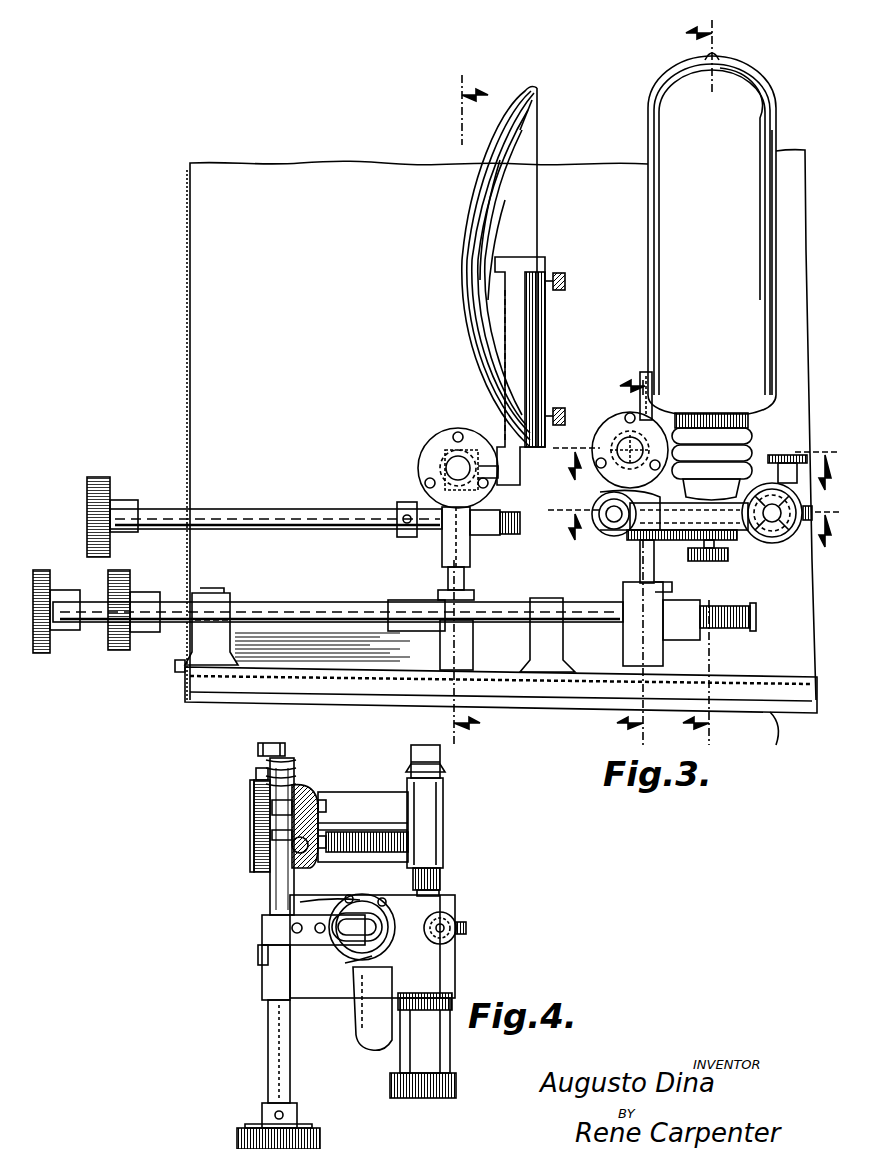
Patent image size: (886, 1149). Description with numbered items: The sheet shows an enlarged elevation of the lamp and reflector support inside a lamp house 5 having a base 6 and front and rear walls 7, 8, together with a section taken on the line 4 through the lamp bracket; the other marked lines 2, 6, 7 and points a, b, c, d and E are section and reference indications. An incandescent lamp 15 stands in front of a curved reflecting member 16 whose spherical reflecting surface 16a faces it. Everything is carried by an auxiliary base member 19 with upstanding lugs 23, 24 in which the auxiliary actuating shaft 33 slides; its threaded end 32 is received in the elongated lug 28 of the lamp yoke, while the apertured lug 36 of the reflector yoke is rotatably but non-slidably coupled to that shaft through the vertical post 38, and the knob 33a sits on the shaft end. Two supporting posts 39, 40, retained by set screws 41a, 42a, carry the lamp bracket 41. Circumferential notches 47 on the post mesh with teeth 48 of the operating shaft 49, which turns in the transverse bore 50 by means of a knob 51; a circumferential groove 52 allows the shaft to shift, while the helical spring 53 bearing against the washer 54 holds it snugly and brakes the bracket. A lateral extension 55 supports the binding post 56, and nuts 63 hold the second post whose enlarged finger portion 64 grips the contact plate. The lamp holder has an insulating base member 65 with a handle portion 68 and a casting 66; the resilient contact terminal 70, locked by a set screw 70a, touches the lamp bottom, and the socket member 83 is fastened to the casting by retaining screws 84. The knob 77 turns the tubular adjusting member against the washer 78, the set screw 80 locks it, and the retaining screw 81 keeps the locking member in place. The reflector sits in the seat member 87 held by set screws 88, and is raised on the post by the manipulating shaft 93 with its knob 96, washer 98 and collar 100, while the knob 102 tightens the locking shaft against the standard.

In FIG. 3, the section line 2 is at (694, 518).
In FIG. 3, the section line 4— 4 is at (696, 459).
In FIG. 3, the lamp house 5 is at (203, 343).
In FIG. 3, the base 6 is at (735, 389).
In FIG. 3, the front wall 7 is at (622, 562).
In FIG. 3, the rear wall 8 is at (190, 272).
In FIG. 3, the lamp 15 is at (770, 102).
In FIG. 3, the reflecting member 16 is at (462, 242).
In FIG. 3, the spherical reflecting surface 16a is at (530, 130).
In FIG. 3, the auxiliary base member 19 is at (500, 670).
In FIG. 3, the upstanding lug 23 is at (226, 600).
In FIG. 3, the upstanding lug 24 is at (560, 600).
In FIG. 3, the elongated lug 28 is at (680, 642).
In FIG. 3, the threaded end 32 is at (732, 632).
In FIG. 3, the auxiliary actuating shaft 33 is at (293, 603).
In FIG. 3, the knob 33a is at (42, 653).
In FIG. 3, the apertured lug 36 is at (400, 600).
In FIG. 3, the vertical post 38 is at (464, 583).
In FIG. 3, the supporting post 39 is at (640, 567).
In FIG. 4, the supporting post 39 is at (290, 870).
In FIG. 4, the supporting post 40 is at (312, 795).
In FIG. 3, the lamp bracket 41 is at (740, 533).
In FIG. 4, the lamp bracket 41 is at (328, 800).
In FIG. 3, the set screw 41a is at (672, 587).
In FIG. 4, the set screw 41a is at (275, 905).
In FIG. 4, the set screw 42a is at (338, 800).
In FIG. 3, the circumferential notches 47 is at (646, 372).
In FIG. 4, the teeth 48 is at (270, 850).
In FIG. 4, the operating shaft 49 is at (268, 965).
In FIG. 4, the transverse bore 50 is at (254, 830).
In FIG. 3, the knob 51 is at (612, 412).
In FIG. 4, the knob 51 is at (320, 1140).
In FIG. 4, the circumferential groove 52 is at (302, 790).
In FIG. 4, the helical spring 53 is at (256, 776).
In FIG. 4, the washer 54 is at (290, 768).
In FIG. 4, the lateral extension 55 is at (393, 792).
In FIG. 4, the binding post 56 is at (445, 775).
In FIG. 4, the nuts 63 is at (258, 750).
In FIG. 4, the enlarged finger portion 64 is at (256, 960).
In FIG. 4, the base member 65 is at (455, 895).
In FIG. 4, the casting 66 is at (380, 900).
In FIG. 4, the handle portion 68 is at (370, 1050).
In FIG. 3, the resilient contact terminal 70 is at (665, 540).
In FIG. 4, the resilient contact terminal 70 is at (350, 953).
In FIG. 3, the set screw 70a is at (722, 562).
In FIG. 3, the knob 77 is at (785, 541).
In FIG. 4, the knob 77 is at (450, 1060).
In FIG. 4, the washer 78 is at (442, 880).
In FIG. 3, the set screw 80 is at (788, 455).
In FIG. 4, the set screw 80 is at (450, 915).
In FIG. 3, the retaining screw 81 is at (810, 525).
In FIG. 4, the retaining screw 81 is at (466, 927).
In FIG. 3, the socket member 83 is at (748, 450).
In FIG. 4, the socket member 83 is at (352, 896).
In FIG. 4, the retaining screws 84 is at (348, 945).
In FIG. 3, the reflector seat member 87 is at (520, 345).
In FIG. 3, the set screws 88 is at (567, 280).
In FIG. 3, the manipulating shaft 93 is at (322, 530).
In FIG. 3, the knob 96 is at (107, 477).
In FIG. 3, the washer 98 is at (512, 535).
In FIG. 3, the collar 100 is at (400, 538).
In FIG. 3, the knob 102 is at (425, 445).
In FIG. 3, the point a is at (608, 425).
In FIG. 3, the gear b is at (140, 595).
In FIG. 3, the shaft c is at (268, 509).
In FIG. 3, the point d is at (427, 410).
In FIG. 4, the post E is at (290, 1055).